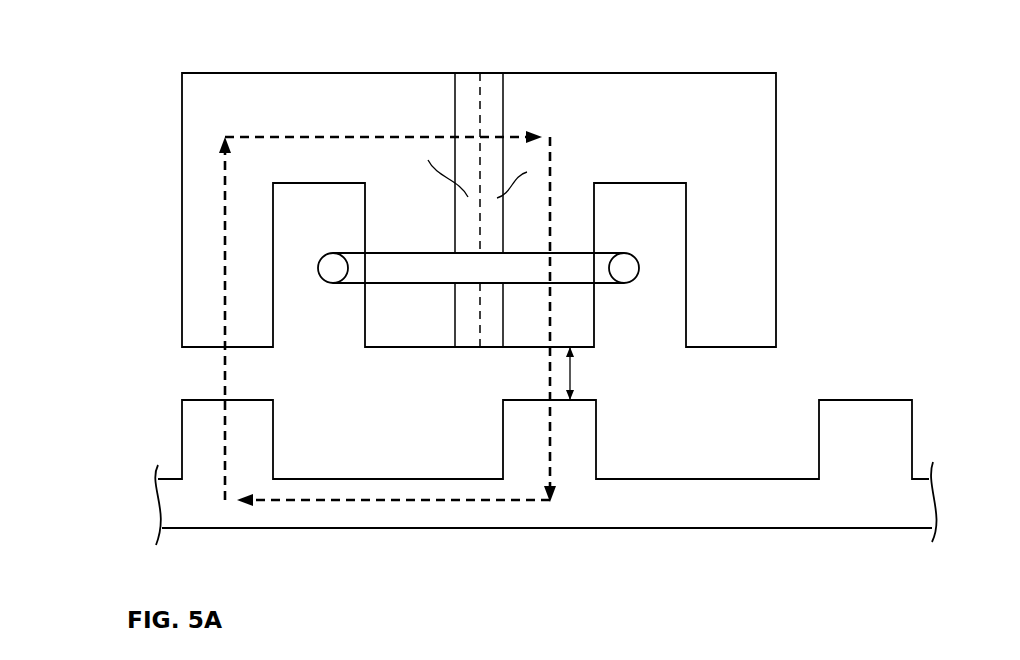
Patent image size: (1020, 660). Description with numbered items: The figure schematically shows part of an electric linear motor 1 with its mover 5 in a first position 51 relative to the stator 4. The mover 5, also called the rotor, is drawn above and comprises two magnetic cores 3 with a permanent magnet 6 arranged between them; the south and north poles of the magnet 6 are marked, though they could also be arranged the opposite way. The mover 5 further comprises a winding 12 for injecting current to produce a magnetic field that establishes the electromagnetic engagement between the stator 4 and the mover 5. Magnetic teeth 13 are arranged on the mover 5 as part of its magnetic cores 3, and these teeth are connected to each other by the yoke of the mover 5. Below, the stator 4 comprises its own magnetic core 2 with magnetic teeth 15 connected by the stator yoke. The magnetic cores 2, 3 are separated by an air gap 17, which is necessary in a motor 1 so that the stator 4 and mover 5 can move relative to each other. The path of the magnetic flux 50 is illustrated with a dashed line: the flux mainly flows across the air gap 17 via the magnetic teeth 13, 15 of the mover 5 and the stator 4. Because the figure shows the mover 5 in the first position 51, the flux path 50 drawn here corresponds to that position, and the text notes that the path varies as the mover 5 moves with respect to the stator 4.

The electric linear motor 1 is at (127, 278).
The magnetic core 2 is at (447, 479).
The magnetic core 3 is at (327, 73).
The stator 4 is at (150, 423).
The mover 5 is at (150, 138).
The permanent magnet 6 is at (472, 50).
The winding 12 is at (440, 263).
The magnetic teeth 13 is at (284, 366).
The magnetic teeth 15 is at (482, 425).
The air gap 17 is at (572, 372).
The path of the magnetic flux 50 is at (552, 178).
The first position 51 is at (832, 142).